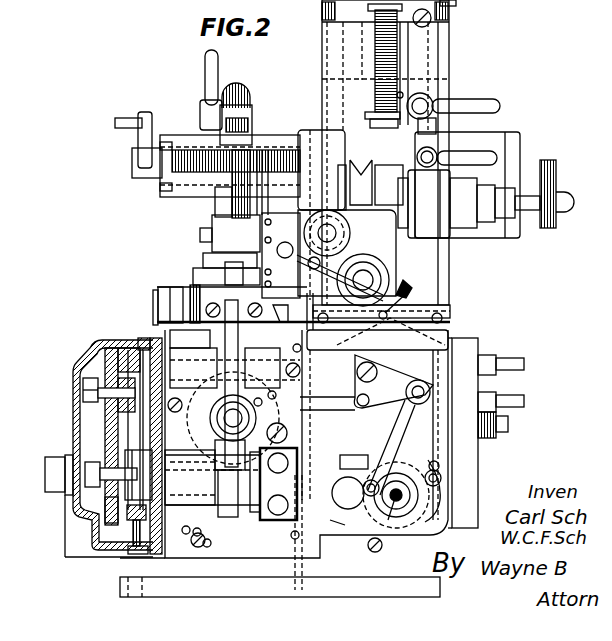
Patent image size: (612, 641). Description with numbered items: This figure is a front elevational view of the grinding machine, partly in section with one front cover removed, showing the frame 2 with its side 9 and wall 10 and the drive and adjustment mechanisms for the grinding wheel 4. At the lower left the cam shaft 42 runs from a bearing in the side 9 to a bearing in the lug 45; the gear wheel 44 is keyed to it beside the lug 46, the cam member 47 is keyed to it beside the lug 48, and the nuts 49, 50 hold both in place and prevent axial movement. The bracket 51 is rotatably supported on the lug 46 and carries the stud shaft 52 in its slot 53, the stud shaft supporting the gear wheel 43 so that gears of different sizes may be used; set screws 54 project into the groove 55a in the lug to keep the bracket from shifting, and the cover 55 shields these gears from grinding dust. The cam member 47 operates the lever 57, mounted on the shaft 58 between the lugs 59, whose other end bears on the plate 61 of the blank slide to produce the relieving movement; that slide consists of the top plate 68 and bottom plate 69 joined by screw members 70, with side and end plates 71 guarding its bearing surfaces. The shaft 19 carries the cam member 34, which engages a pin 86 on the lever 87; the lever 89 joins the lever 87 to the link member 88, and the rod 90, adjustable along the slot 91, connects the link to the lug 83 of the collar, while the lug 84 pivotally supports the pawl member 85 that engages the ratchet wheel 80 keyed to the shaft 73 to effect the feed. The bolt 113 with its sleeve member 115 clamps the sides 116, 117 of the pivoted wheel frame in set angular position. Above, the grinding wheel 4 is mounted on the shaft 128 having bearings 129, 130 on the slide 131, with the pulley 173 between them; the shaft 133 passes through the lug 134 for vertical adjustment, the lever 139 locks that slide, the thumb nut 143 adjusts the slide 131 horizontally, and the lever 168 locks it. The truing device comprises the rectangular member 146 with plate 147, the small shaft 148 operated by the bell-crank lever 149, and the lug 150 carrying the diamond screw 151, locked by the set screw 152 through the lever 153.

The frame 2 is at (120, 588).
The grinding wheel 4 is at (212, 232).
The side of the frame 9 is at (182, 530).
The wall 10 is at (318, 572).
The shaft 19 is at (218, 418).
The cam member 34 is at (225, 430).
The cam shaft 42 is at (85, 480).
The gear wheel 43 is at (105, 432).
The gear wheel 44 is at (127, 512).
The lug 45 is at (310, 500).
The lug 46 is at (135, 500).
The cam member 47 is at (225, 460).
The lug 48 is at (225, 517).
The nut 49 is at (105, 505).
The nut 50 is at (265, 520).
The bracket 51 is at (138, 338).
The stud shaft 52 is at (83, 391).
The slot 53 is at (150, 340).
The set screws 54 is at (137, 554).
The cover 55 is at (88, 342).
The groove 55a is at (190, 505).
The lever 57 is at (262, 348).
The shaft 58 is at (286, 322).
The lugs 59 is at (195, 348).
The plate 61 is at (225, 312).
The top plate 68 is at (160, 287).
The bottom plate 69 is at (180, 328).
The screw members 70 is at (194, 284).
The side and end plates 71 is at (153, 292).
The shaft 73 is at (393, 515).
The ratchet wheel 80 is at (400, 530).
The lug 83 is at (371, 480).
The lug 84 is at (430, 470).
The pawl member 85 is at (445, 493).
The pin 86 is at (218, 398).
The lever 87 is at (270, 440).
The link member 88 is at (400, 410).
The lever 89 is at (345, 390).
The rod 90 is at (418, 404).
The slot 91 is at (396, 322).
The bolt 113 is at (508, 426).
The sleeve member 115 is at (348, 477).
The side of the frame 116 is at (452, 455).
The side of the frame 117 is at (345, 459).
The shaft 128 is at (215, 210).
The bearing 129 is at (320, 160).
The bearing 130 is at (450, 230).
The slide 131 is at (490, 132).
The shaft 133 is at (375, 62).
The lug 134 is at (456, 4).
The lever 139 is at (470, 100).
The thumb nut 143 is at (552, 160).
The rectangular member 146 is at (180, 135).
The plate 147 is at (160, 195).
The small shaft 148 is at (200, 150).
The bell-crank lever 149 is at (138, 118).
The lug 150 is at (252, 112).
The screw 151 is at (242, 92).
The set screw 152 is at (248, 125).
The lever 153 is at (218, 65).
The lever 168 is at (488, 152).
The pulley 173 is at (361, 165).